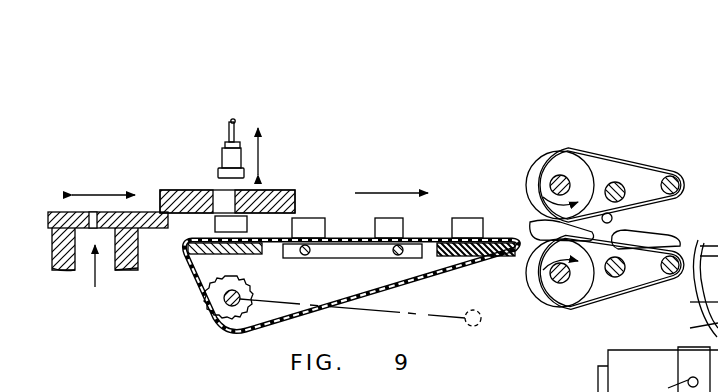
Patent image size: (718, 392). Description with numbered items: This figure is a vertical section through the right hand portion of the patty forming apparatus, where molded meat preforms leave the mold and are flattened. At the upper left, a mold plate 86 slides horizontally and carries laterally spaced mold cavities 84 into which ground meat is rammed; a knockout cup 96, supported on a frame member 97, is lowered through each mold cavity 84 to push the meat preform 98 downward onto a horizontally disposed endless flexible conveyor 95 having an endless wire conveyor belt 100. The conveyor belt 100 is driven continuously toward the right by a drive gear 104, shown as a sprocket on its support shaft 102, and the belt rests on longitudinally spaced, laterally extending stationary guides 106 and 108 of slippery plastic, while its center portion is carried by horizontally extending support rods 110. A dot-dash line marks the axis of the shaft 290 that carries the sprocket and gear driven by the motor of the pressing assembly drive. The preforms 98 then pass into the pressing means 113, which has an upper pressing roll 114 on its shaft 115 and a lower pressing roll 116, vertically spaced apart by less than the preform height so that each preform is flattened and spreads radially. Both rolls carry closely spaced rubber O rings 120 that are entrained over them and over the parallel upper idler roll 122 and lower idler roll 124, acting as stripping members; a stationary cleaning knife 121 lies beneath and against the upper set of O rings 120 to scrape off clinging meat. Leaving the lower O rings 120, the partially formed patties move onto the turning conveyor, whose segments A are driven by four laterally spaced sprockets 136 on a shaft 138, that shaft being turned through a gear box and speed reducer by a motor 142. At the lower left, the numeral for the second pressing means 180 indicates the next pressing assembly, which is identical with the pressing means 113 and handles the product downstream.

The mold cavity 84 is at (233, 198).
The mold plate 86 is at (183, 199).
The endless flexible conveyor 95 is at (364, 183).
The knockout cup 96 is at (218, 170).
The frame member 97 is at (226, 142).
The preform 98 is at (400, 222).
The endless wire conveyor belt 100 is at (342, 273).
The support shaft 102 is at (224, 300).
The drive gear 104 is at (235, 314).
The stationary guide 106 is at (214, 258).
The stationary guide 108 is at (445, 258).
The support rod 110 is at (385, 253).
The pressing means 113 is at (603, 215).
The upper pressing roll 114 is at (553, 162).
The shaft 115 is at (552, 184).
The lower pressing roll 116 is at (567, 298).
The rubber O rings 120 is at (607, 152).
The stationary cleaning knife 121 is at (613, 218).
The upper idler roll 122 is at (668, 177).
The lower idler roll 124 is at (687, 285).
The sprocket 136 is at (682, 303).
The shaft 138 is at (682, 329).
The motor 142 is at (666, 387).
The second pressing means 180 is at (100, 391).
The shaft 290 is at (556, 278).